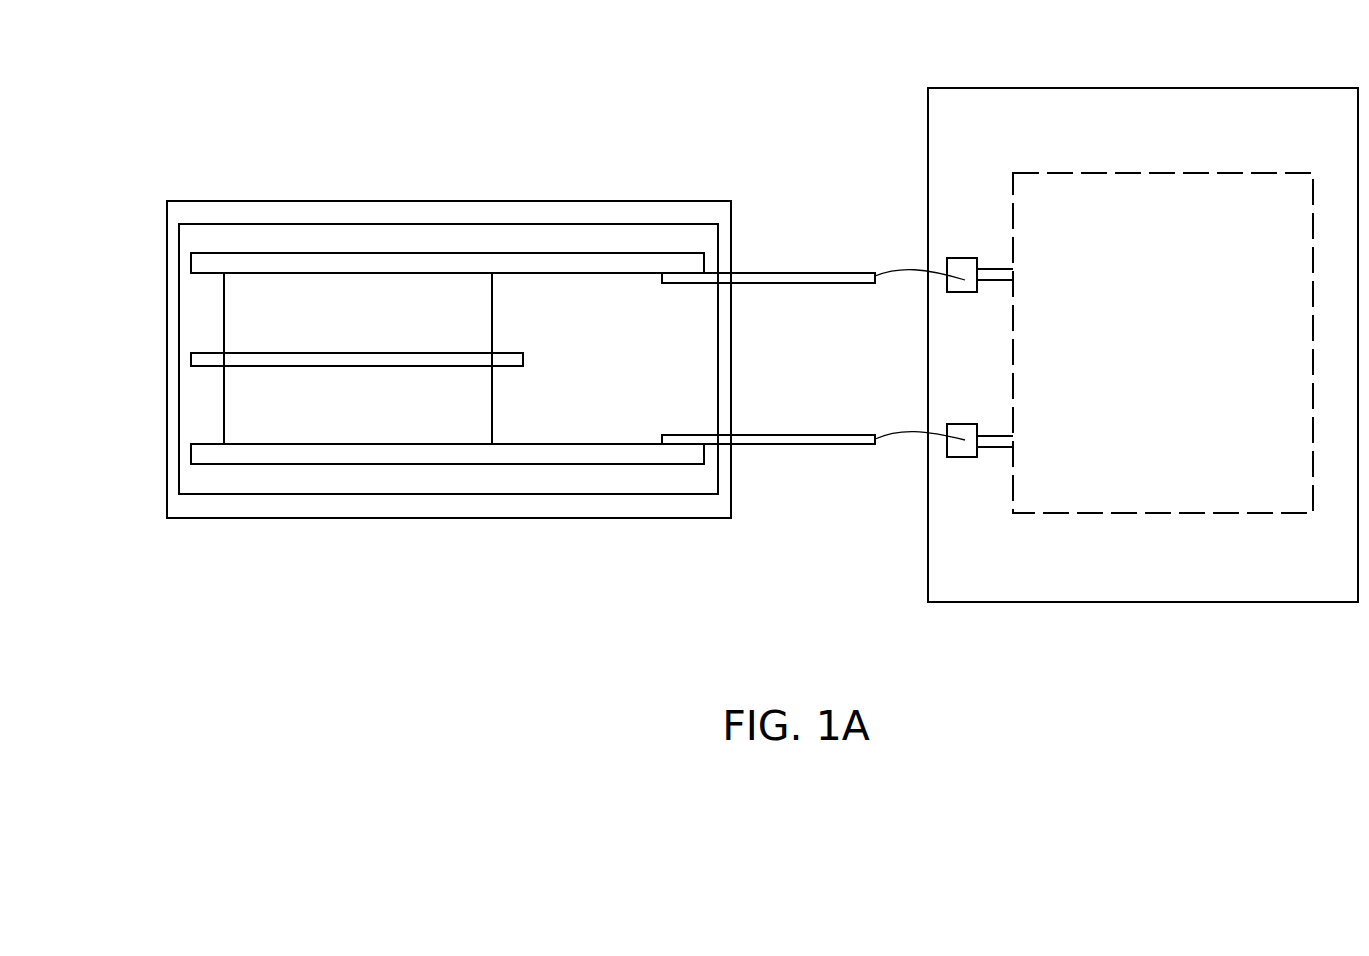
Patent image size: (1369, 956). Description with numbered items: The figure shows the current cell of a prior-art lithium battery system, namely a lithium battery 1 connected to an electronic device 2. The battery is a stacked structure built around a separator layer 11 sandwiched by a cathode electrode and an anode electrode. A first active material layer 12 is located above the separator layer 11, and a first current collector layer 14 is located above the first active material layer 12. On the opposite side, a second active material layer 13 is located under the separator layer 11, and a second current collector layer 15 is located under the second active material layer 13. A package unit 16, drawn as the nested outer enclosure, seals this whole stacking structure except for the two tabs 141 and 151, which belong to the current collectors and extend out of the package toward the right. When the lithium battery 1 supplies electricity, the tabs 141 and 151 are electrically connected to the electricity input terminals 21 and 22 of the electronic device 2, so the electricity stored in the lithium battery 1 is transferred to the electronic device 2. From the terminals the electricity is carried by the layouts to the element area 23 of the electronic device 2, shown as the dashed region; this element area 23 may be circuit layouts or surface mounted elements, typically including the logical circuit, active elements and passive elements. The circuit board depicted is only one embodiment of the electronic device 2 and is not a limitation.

The lithium battery 1 is at (255, 104).
The separator layer 11 is at (198, 357).
The first active material layer 12 is at (420, 285).
The second active material layer 13 is at (337, 437).
The first current collector layer 14 is at (578, 253).
The tab 141 is at (798, 273).
The second current collector layer 15 is at (560, 453).
The tab 151 is at (803, 438).
The package unit 16 is at (167, 203).
The electronic device 2 is at (1022, 91).
The electricity input terminal 21 is at (963, 283).
The electricity input terminal 22 is at (958, 457).
The element area 23 is at (1213, 190).